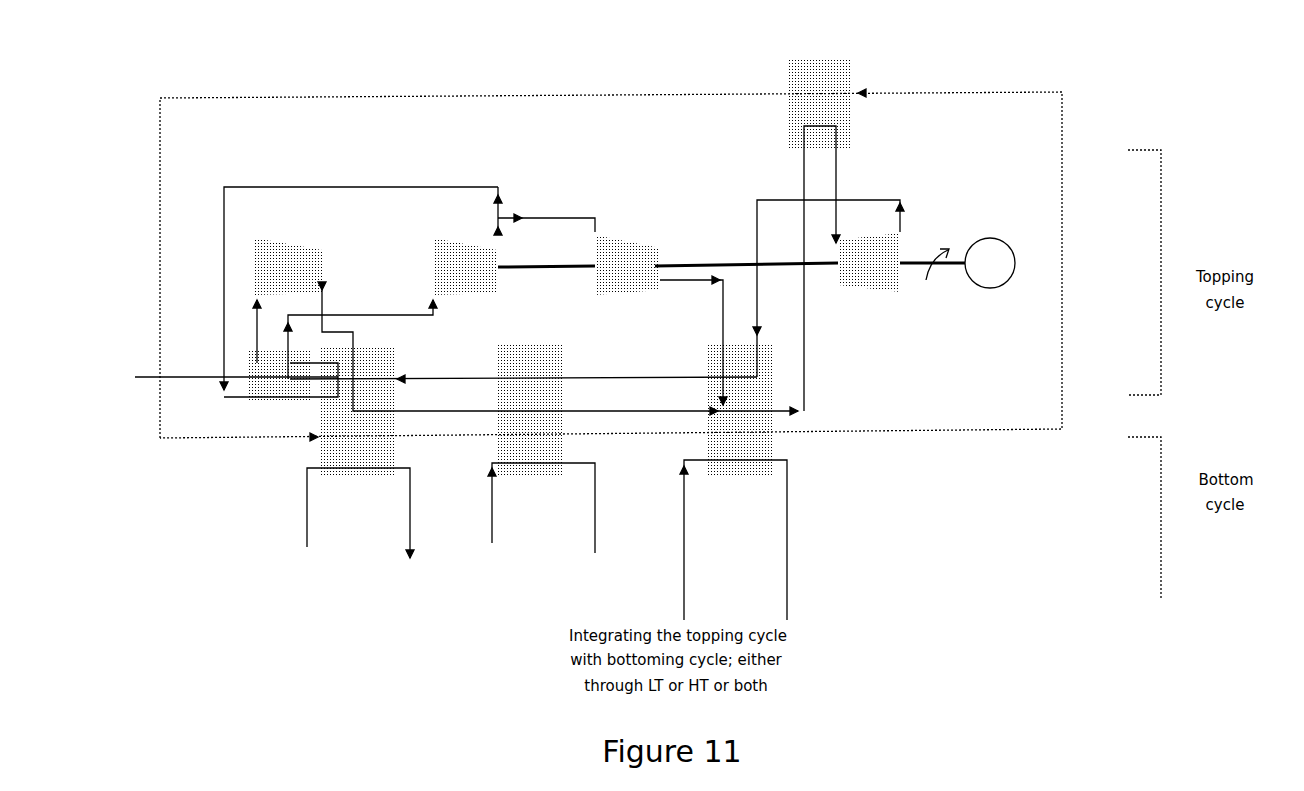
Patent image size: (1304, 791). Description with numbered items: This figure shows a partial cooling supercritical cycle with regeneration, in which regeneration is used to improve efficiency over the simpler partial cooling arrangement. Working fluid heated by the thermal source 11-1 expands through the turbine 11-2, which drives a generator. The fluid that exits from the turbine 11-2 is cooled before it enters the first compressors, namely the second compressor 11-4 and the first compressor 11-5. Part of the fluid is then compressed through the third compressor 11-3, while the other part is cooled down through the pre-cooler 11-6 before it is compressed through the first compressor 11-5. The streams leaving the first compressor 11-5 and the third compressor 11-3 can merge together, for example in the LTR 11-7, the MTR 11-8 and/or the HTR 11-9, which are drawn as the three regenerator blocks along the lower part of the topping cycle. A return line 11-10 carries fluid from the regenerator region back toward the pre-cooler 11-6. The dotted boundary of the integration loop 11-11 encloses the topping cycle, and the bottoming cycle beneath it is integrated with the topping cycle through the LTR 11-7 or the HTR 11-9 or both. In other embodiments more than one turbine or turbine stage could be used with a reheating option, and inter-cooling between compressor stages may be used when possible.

The thermal source 11-1 is at (845, 216).
The turbine 11-2 is at (835, 273).
The compressor C3 11-3 is at (612, 301).
The compressor C2 11-4 is at (402, 283).
The compressor C1 11-5 is at (509, 301).
The pre-cooler 11-6 is at (211, 380).
The LTR 11-7 is at (323, 445).
The MTR 11-8 is at (561, 449).
The HTR 11-9 is at (764, 482).
The return line to precooler 11-10 is at (773, 386).
The integration loop 11-11 is at (978, 430).